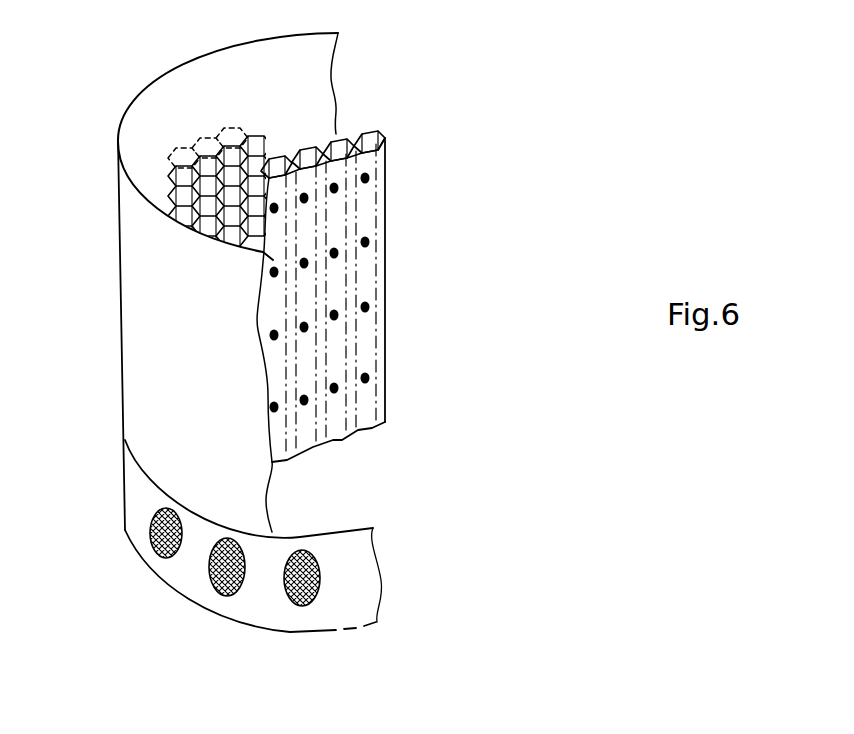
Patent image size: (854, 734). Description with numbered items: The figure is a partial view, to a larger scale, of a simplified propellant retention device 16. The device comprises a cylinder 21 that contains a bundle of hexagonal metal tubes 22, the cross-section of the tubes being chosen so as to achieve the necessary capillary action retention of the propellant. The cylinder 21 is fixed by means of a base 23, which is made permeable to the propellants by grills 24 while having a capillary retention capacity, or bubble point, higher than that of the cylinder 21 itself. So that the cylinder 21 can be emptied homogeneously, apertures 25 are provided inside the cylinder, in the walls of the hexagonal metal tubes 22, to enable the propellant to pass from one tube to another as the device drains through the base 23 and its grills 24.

The catalytic converter / honeycomb body assembly 16 is at (465, 154).
The cylinder 21 is at (340, 36).
The hexagonal metal tubes 22 is at (303, 137).
The base 23 is at (125, 477).
The grills 24 is at (286, 598).
The apertures 25 is at (366, 176).